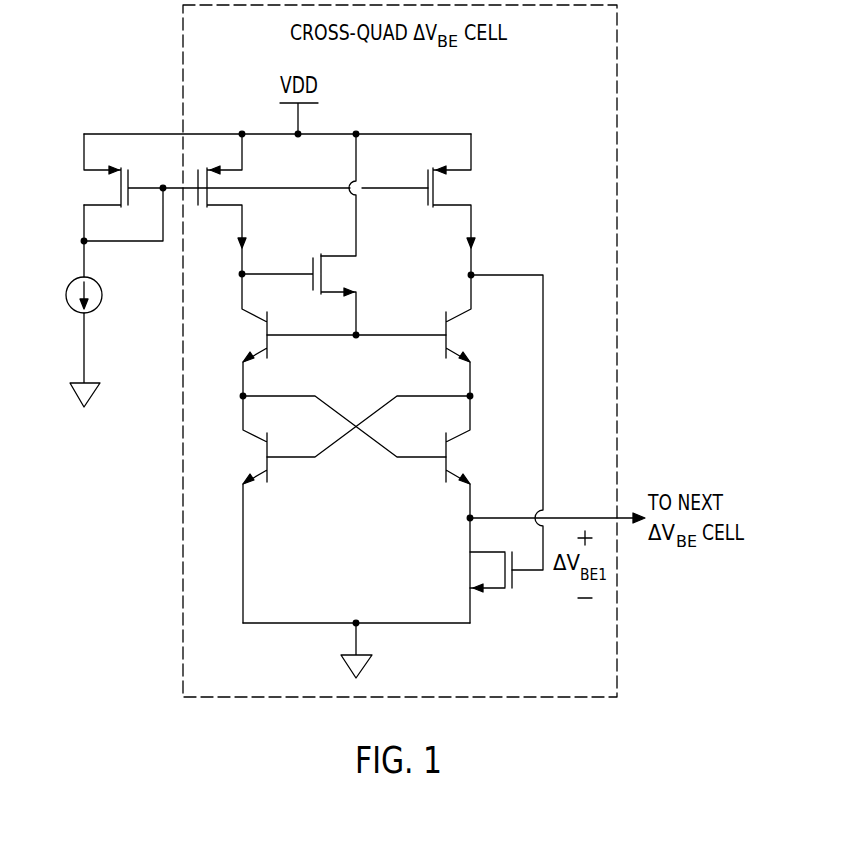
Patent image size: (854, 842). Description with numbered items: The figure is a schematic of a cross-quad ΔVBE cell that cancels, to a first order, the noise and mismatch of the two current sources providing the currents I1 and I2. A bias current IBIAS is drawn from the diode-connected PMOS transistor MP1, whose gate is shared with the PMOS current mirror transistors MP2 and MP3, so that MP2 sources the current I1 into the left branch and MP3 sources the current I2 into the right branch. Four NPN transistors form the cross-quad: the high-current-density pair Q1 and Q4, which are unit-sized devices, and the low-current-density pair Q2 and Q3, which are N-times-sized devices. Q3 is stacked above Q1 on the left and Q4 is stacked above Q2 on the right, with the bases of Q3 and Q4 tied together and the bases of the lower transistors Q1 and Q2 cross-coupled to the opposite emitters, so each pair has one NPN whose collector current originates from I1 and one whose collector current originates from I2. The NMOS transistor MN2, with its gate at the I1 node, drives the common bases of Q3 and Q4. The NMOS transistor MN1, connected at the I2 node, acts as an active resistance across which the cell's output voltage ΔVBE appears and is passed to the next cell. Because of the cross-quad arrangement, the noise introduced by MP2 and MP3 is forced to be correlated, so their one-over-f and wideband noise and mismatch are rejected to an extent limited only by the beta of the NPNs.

The PMOS current mirror transistor MP1 is at (123, 205).
The PMOS current mirror transistor MP2 is at (313, 204).
The PMOS current mirror transistor MP3 is at (468, 204).
The N-channel field-effect transistor MN1 is at (473, 572).
The NMOS FET MN2 is at (317, 296).
The high-current-density transistor Q1 is at (267, 509).
The low-current-density transistor Q2 is at (446, 509).
The low-current-density transistor Q3 is at (266, 335).
The high-current-density transistor Q4 is at (448, 335).
The first current I1 is at (256, 227).
The second current I2 is at (484, 232).
The bias current IBIAS is at (109, 342).